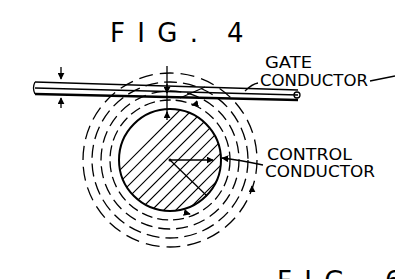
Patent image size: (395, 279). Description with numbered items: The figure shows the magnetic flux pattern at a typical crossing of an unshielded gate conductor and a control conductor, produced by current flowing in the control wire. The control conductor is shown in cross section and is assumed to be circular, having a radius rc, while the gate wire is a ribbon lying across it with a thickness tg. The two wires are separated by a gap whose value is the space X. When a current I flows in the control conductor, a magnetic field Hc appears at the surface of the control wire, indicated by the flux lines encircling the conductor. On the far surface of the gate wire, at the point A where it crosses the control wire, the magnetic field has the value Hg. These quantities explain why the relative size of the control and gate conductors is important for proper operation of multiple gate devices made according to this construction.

The magnetic field at point A Hg is at (163, 78).
The gate wire thickness tg is at (61, 108).
The point A is at (178, 87).
The space between control and gate wires X is at (186, 100).
The control wire radius rc is at (207, 196).
The magnetic field at surface of control wire Hc is at (190, 218).